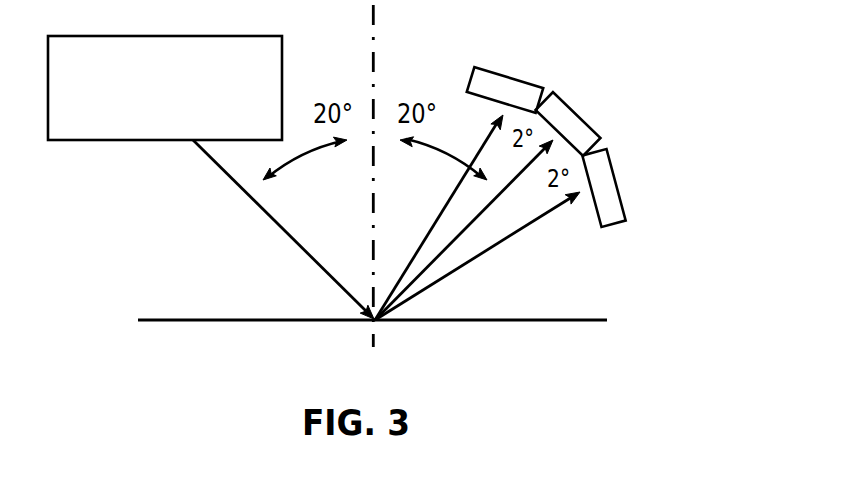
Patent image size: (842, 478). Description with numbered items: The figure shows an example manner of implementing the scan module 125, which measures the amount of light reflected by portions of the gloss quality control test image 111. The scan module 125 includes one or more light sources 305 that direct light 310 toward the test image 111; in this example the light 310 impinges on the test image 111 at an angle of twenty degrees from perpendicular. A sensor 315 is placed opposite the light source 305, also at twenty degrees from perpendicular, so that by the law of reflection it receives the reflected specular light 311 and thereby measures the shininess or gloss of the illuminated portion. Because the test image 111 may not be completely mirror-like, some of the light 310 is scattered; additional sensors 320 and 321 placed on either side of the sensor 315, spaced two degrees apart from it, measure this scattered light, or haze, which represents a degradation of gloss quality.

The light source 305 is at (188, 118).
The light 310 is at (230, 178).
The reflected specular light 311 is at (470, 228).
The gloss quality control test image 111 is at (227, 320).
The sensor 321 is at (498, 72).
The sensor 315 is at (585, 120).
The sensor 320 is at (623, 200).
The scan module 125 is at (537, 382).